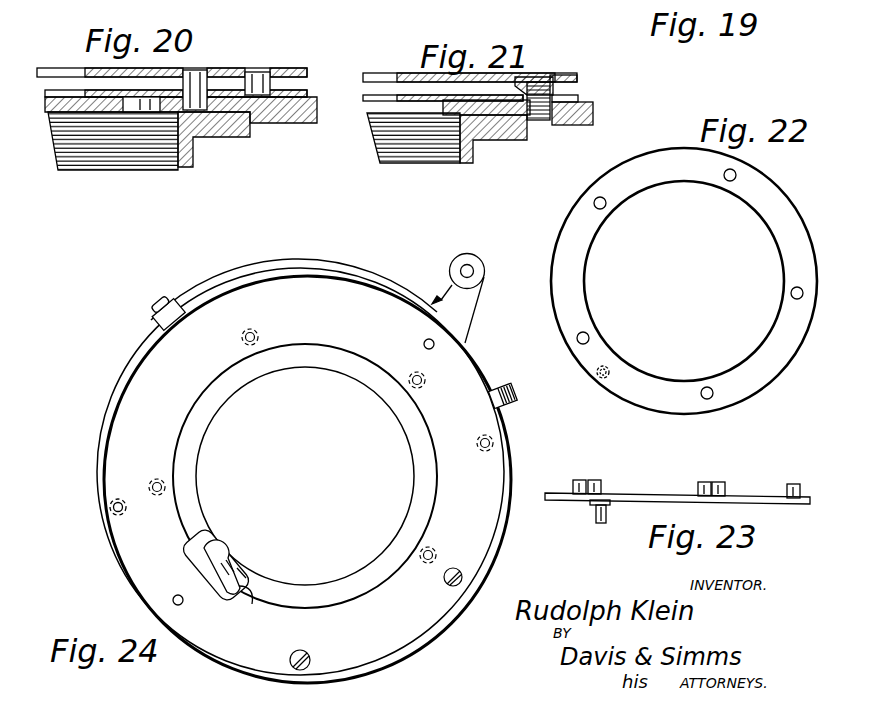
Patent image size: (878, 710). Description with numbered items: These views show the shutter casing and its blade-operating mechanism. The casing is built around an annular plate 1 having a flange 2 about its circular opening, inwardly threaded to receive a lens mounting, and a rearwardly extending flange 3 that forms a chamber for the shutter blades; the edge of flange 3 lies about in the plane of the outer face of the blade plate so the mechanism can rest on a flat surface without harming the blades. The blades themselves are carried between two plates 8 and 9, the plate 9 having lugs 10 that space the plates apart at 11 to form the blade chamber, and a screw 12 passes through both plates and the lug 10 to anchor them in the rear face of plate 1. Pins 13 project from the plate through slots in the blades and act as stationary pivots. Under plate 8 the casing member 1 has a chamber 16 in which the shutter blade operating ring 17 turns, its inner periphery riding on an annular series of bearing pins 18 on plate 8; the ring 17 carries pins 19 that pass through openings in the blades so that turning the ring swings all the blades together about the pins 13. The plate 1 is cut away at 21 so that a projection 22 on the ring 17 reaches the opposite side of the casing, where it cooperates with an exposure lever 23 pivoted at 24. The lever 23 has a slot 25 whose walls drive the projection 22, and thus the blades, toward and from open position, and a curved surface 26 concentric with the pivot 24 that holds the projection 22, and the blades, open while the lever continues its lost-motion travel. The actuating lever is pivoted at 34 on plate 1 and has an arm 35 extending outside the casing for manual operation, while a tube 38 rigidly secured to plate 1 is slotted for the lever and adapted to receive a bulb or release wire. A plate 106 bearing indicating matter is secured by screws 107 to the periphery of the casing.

In FIG. 20, the annular plate 1 is at (246, 136).
In FIG. 21, the annular plate 1 is at (590, 118).
In FIG. 24, the annular plate 1 is at (140, 398).
In FIG. 20, the flange 2 is at (185, 166).
In FIG. 21, the flange 2 is at (473, 162).
In FIG. 24, the flange 2 is at (246, 571).
In FIG. 24, the rearwardly extending flange 3 is at (105, 432).
In FIG. 20, the plate 8 is at (265, 101).
In FIG. 21, the plate 8 is at (378, 101).
In FIG. 20, the plate 9 is at (295, 72).
In FIG. 21, the plate 9 is at (400, 73).
In FIG. 21, the lugs 10 is at (578, 92).
In FIG. 21, the spacing 11 is at (408, 82).
In FIG. 21, the screw 12 is at (546, 76).
In FIG. 20, the pins 13 is at (256, 72).
In FIG. 24, the chamber 16 is at (386, 560).
In FIG. 20, the shutter blade operating ring 17 is at (222, 105).
In FIG. 22, the shutter blade operating ring 17 is at (572, 279).
In FIG. 23, the shutter blade operating ring 17 is at (650, 489).
In FIG. 20, the bearing pins 18 is at (138, 102).
In FIG. 20, the pins 19 is at (196, 76).
In FIG. 21, the pins 19 is at (367, 18).
In FIG. 22, the pins 19 is at (605, 207).
In FIG. 23, the pins 19 is at (722, 474).
In FIG. 24, the cut away 21 is at (222, 541).
In FIG. 22, the projection 22 is at (607, 368).
In FIG. 23, the projection 22 is at (596, 518).
In FIG. 24, the exposure lever 23 is at (196, 560).
In FIG. 24, the pivot 24 is at (182, 605).
In FIG. 24, the slot 25 is at (240, 560).
In FIG. 24, the curved surface 26 is at (253, 605).
In FIG. 24, the pivot 34 is at (434, 344).
In FIG. 24, the arm 35 is at (470, 310).
In FIG. 24, the tube 38 is at (517, 407).
In FIG. 24, the plate 106 is at (262, 268).
In FIG. 24, the screws 107 is at (163, 299).